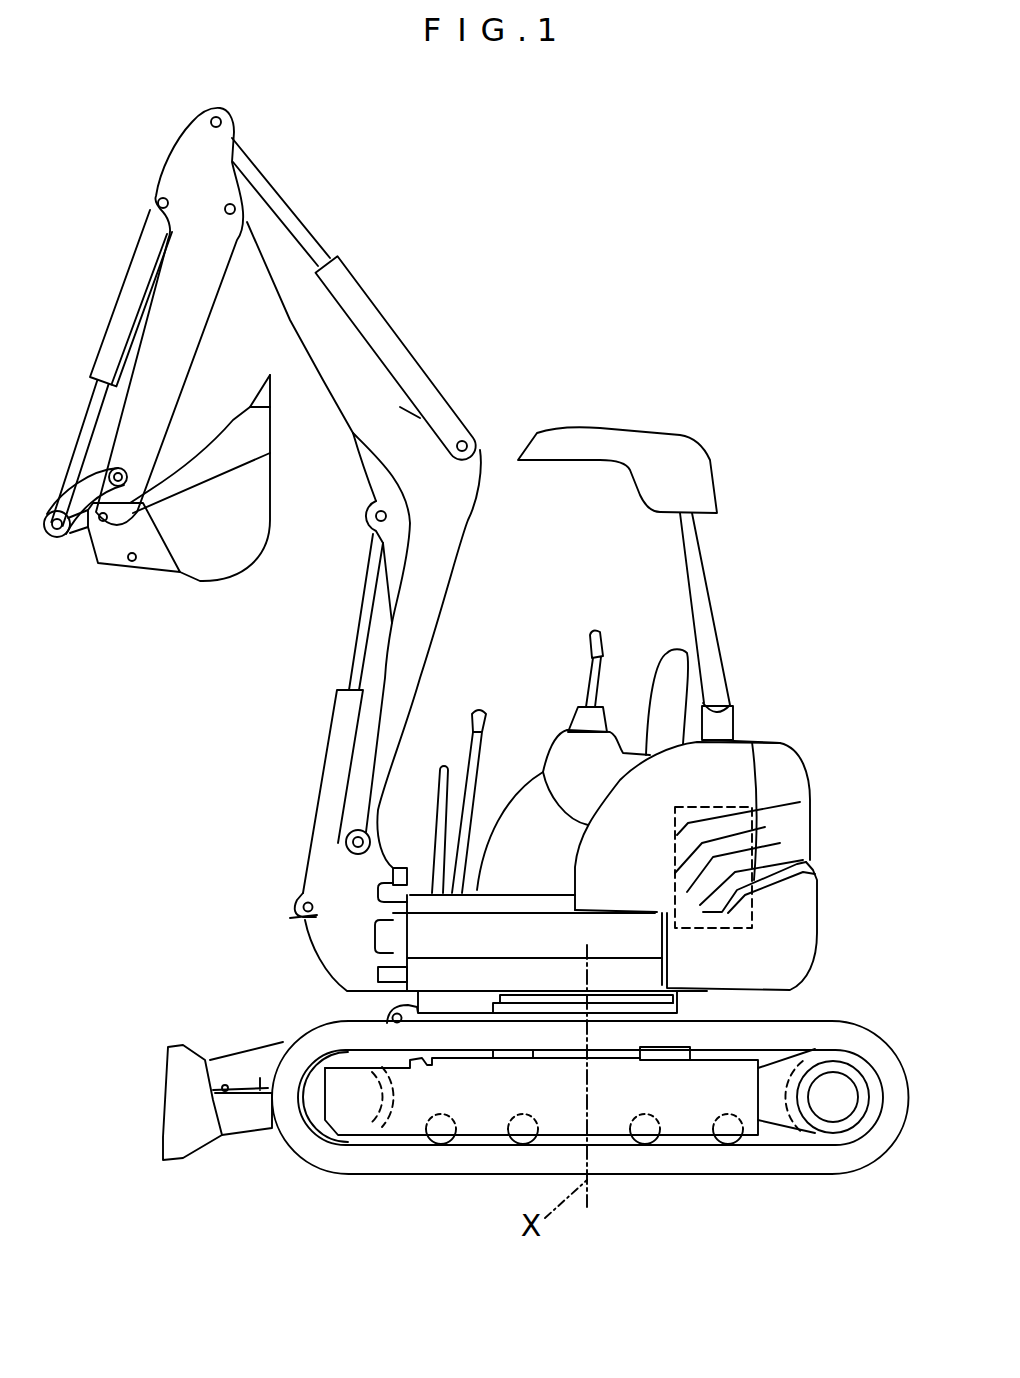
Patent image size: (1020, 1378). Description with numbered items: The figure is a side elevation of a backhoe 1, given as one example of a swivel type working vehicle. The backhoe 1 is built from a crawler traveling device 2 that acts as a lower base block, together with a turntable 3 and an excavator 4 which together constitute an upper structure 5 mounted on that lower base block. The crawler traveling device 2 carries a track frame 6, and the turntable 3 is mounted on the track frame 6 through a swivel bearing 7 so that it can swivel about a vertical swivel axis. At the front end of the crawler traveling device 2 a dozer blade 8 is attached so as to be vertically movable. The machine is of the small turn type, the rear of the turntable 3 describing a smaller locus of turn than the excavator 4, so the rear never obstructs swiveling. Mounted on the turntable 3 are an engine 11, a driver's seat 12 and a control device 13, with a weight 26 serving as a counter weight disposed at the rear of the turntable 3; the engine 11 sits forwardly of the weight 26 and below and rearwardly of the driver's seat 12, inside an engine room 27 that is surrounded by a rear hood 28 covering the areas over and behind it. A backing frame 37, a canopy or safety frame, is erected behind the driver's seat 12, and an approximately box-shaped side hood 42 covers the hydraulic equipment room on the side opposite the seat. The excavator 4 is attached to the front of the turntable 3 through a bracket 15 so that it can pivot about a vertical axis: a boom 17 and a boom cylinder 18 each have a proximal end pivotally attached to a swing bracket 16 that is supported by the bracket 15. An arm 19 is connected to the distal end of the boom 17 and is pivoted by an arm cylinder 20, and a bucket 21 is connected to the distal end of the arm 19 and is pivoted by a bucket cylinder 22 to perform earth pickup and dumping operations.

The backhoe 1 is at (730, 502).
The crawler traveling device 2 is at (833, 1000).
The turntable 3 is at (635, 947).
The excavator 4 is at (425, 300).
The upper structure 5 is at (658, 996).
The track frame 6 is at (470, 1143).
The swivel bearing 7 is at (532, 1005).
The dozer blade 8 is at (185, 1048).
The engine 11 is at (697, 805).
The driver's seat 12 is at (670, 667).
The control device 13 is at (562, 697).
The bracket 15 is at (393, 867).
The swing bracket 16 is at (302, 905).
The boom 17 is at (443, 571).
The boom cylinder 18 is at (338, 702).
The arm 19 is at (188, 323).
The arm cylinder 20 is at (432, 398).
The bucket 21 is at (198, 552).
The bucket cylinder 22 is at (138, 233).
The weight 26 is at (793, 910).
The engine room 27 is at (792, 777).
The rear hood 28 is at (785, 725).
The backing frame 37 is at (645, 428).
The side hood 42 is at (523, 800).